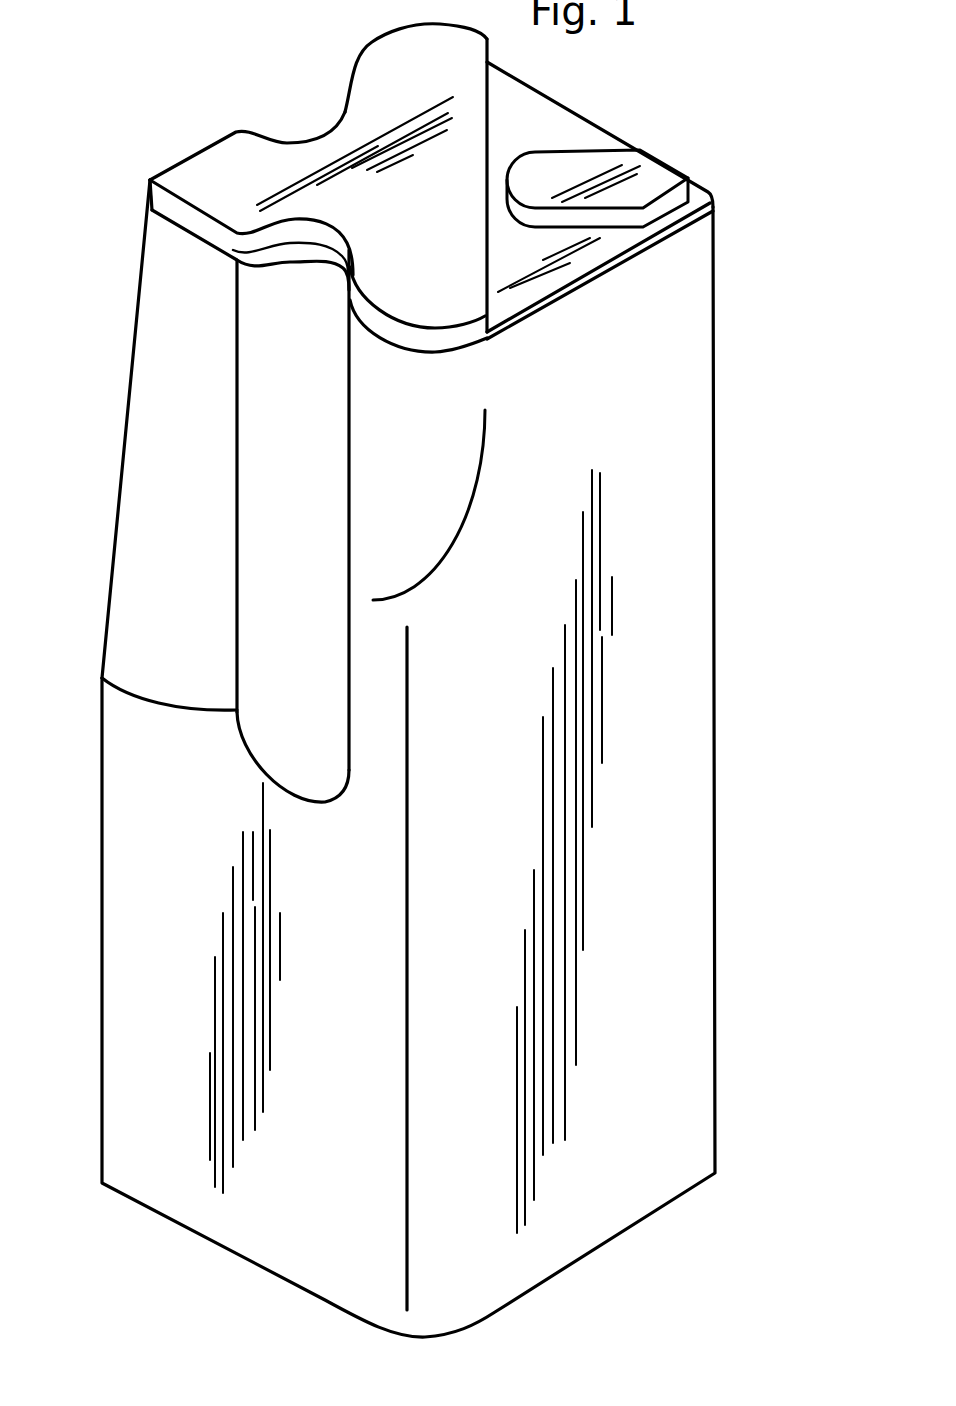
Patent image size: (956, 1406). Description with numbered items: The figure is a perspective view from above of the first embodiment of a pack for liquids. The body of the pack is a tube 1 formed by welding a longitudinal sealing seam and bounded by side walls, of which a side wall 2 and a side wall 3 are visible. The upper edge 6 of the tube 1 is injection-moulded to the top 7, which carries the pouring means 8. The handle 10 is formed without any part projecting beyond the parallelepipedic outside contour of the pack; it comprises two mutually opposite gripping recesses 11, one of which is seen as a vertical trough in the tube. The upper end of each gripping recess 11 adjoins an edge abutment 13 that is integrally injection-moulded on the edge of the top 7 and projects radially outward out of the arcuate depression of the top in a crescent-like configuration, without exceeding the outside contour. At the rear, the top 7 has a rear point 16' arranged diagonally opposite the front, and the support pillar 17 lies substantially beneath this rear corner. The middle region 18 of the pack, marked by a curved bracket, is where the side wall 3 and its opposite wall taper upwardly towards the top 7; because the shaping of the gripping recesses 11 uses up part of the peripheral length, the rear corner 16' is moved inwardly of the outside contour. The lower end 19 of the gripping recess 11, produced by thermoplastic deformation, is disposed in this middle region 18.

The tube 1 is at (102, 888).
The side wall 2 is at (638, 1017).
The side wall 3 is at (135, 1032).
The upper edge 6 is at (657, 243).
The top 7 is at (374, 126).
The pouring means 8 is at (632, 172).
The handle 10 is at (236, 500).
The gripping recess 11 is at (275, 137).
The edge abutment 13 is at (243, 267).
The rear point 16' is at (117, 171).
The support pillar 17 is at (140, 440).
The middle region 18 is at (87, 603).
The lower end 19 is at (280, 762).